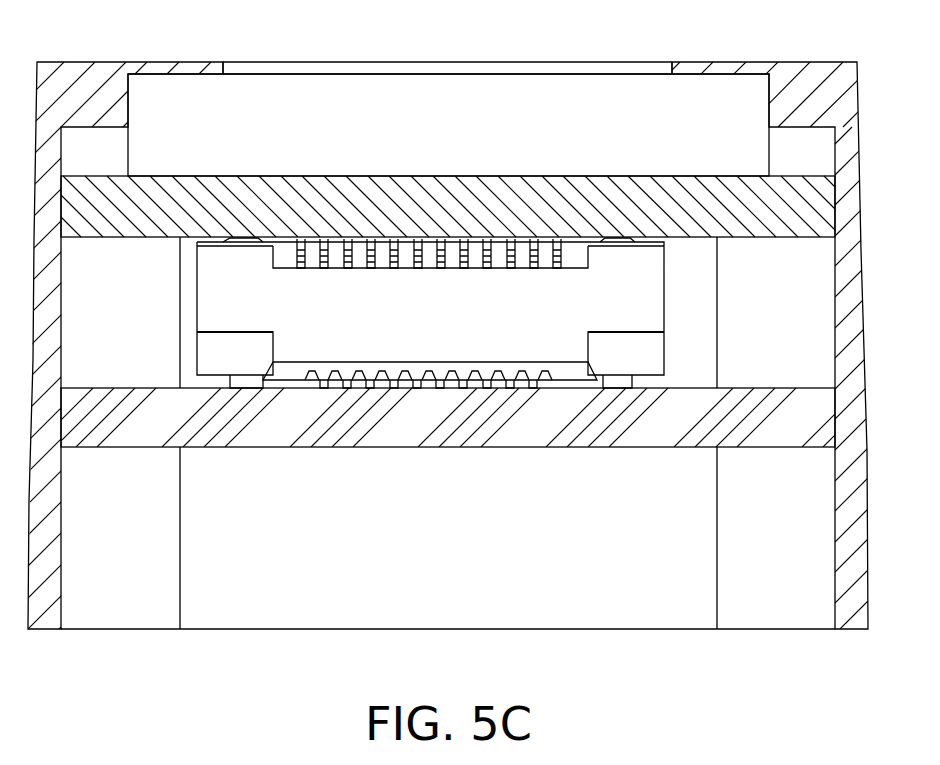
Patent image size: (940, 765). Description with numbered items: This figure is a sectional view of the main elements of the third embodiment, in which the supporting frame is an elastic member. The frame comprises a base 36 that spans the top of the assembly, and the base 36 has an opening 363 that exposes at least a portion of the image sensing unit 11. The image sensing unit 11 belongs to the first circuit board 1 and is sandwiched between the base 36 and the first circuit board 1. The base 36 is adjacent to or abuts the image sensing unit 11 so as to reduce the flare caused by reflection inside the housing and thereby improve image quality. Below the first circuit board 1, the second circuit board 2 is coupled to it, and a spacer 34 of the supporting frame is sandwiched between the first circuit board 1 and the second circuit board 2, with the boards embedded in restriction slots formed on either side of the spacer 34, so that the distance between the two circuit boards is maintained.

The base 36 is at (847, 95).
The opening 363 is at (387, 68).
The image sensing unit 11 is at (597, 105).
The first circuit board 1 is at (828, 197).
The second circuit board 2 is at (827, 412).
The spacer 34 is at (812, 300).